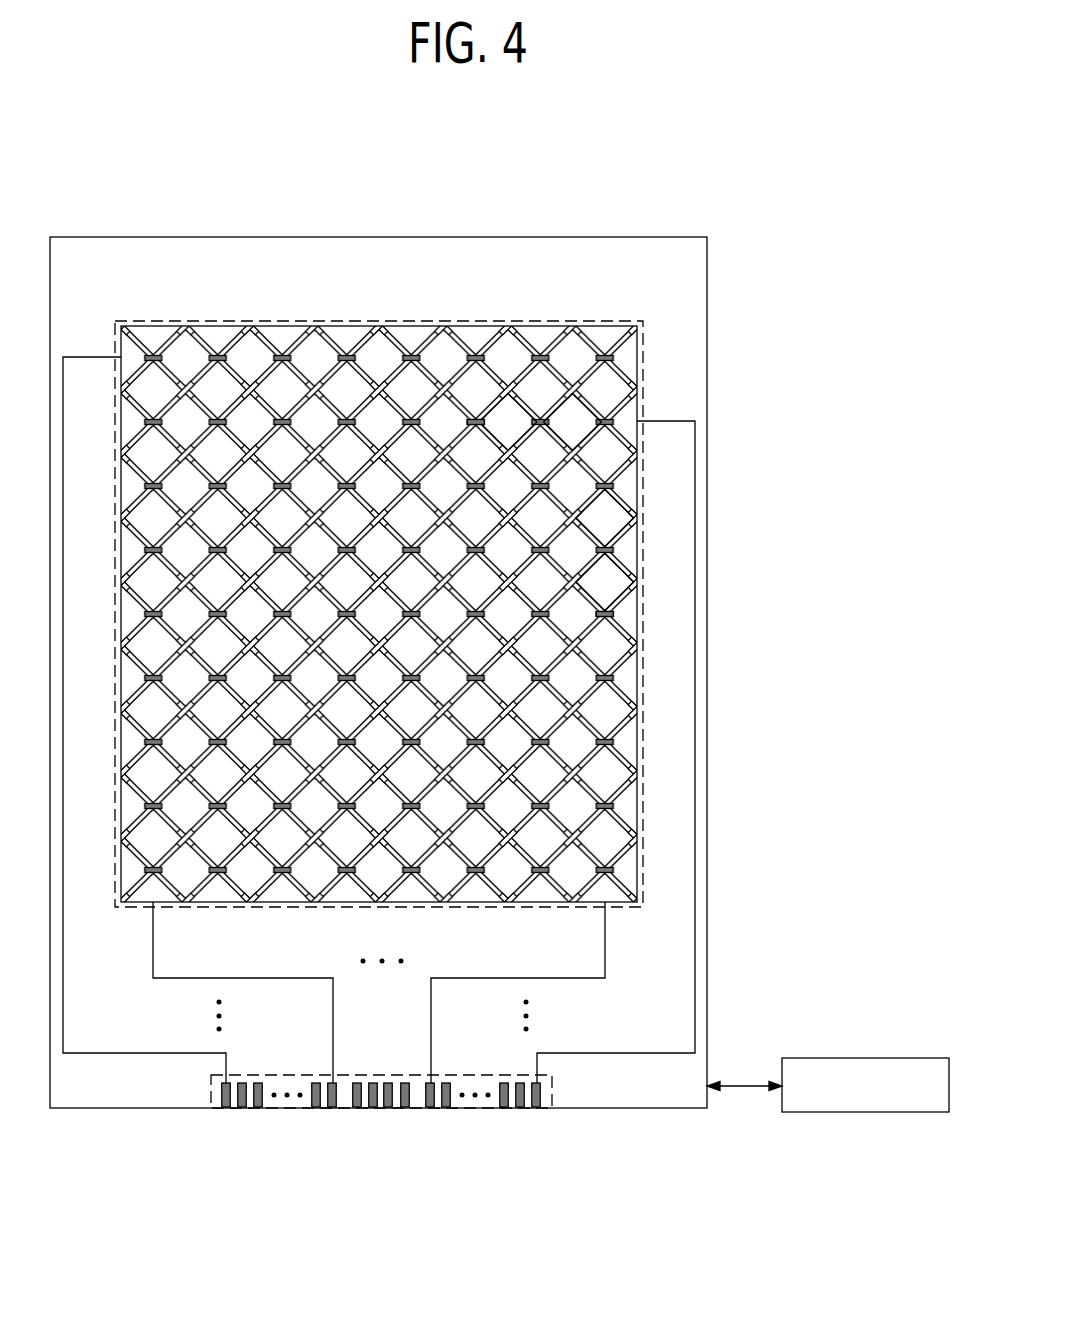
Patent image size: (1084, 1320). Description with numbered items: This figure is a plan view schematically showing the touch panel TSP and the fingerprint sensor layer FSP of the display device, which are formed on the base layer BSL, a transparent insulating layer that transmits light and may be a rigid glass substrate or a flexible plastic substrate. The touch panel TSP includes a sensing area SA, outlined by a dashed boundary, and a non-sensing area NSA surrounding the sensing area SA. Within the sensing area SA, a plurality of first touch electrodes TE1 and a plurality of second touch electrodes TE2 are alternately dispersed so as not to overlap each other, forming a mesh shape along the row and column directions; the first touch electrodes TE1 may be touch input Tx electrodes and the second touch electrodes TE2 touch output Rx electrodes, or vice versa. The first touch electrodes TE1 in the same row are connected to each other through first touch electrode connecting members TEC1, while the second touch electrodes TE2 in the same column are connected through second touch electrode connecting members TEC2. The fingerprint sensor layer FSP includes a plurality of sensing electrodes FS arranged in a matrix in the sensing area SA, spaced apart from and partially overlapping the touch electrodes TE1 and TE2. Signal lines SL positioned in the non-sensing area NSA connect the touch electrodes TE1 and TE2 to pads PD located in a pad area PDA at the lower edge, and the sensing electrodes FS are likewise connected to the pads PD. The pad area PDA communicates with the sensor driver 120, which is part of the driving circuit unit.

The touch panel TSP is at (417, 634).
The fingerprint sensor layer FSP is at (534, 146).
The base layer BSL is at (672, 236).
The sensing area SA is at (553, 321).
The sensing electrode FS is at (254, 380).
The first touch electrode TE1 is at (513, 412).
The first touch electrode connecting member TEC1 is at (478, 416).
The second touch electrode TE2 is at (603, 573).
The second touch electrode connecting member TEC2 is at (612, 610).
The non-sensing area NSA is at (682, 830).
The signal line SL is at (695, 970).
The sensor driver 120 is at (872, 1057).
The pad area PDA is at (212, 1090).
The pad PD is at (537, 1107).